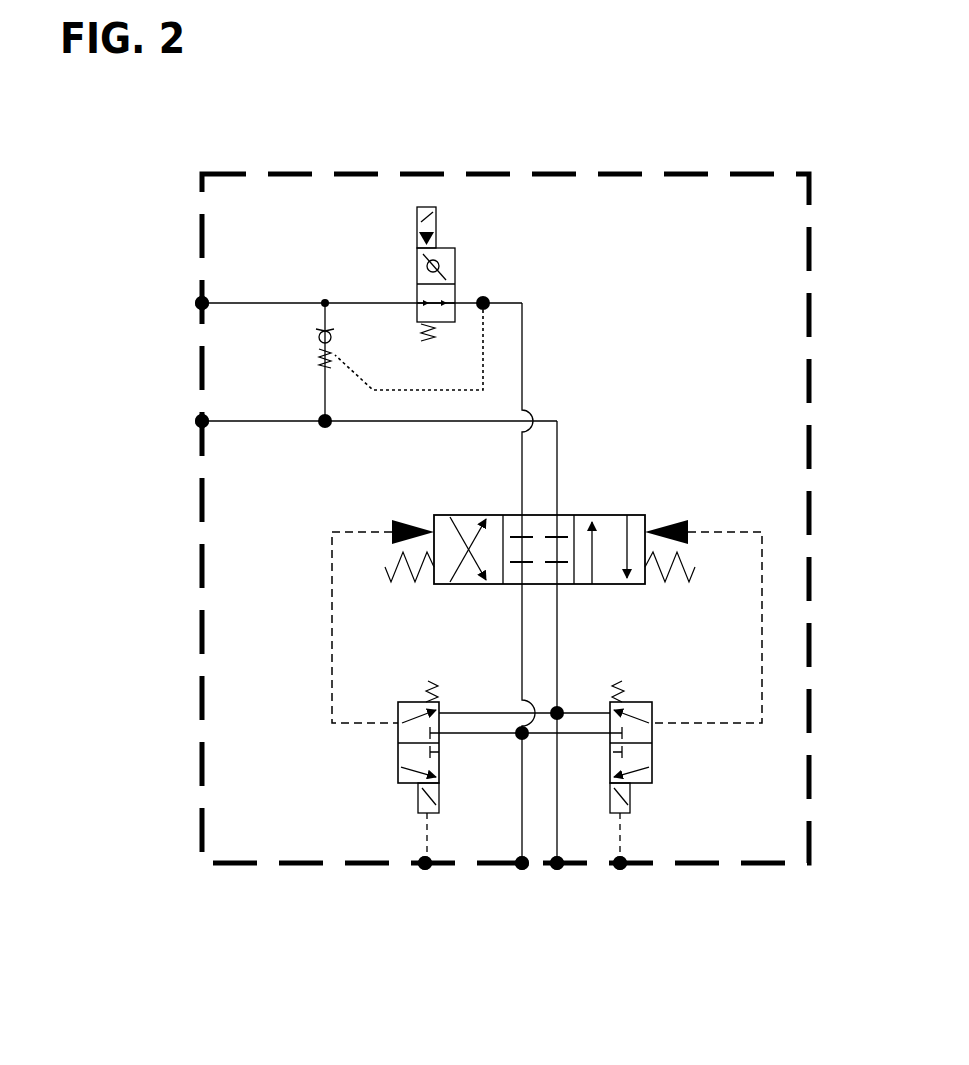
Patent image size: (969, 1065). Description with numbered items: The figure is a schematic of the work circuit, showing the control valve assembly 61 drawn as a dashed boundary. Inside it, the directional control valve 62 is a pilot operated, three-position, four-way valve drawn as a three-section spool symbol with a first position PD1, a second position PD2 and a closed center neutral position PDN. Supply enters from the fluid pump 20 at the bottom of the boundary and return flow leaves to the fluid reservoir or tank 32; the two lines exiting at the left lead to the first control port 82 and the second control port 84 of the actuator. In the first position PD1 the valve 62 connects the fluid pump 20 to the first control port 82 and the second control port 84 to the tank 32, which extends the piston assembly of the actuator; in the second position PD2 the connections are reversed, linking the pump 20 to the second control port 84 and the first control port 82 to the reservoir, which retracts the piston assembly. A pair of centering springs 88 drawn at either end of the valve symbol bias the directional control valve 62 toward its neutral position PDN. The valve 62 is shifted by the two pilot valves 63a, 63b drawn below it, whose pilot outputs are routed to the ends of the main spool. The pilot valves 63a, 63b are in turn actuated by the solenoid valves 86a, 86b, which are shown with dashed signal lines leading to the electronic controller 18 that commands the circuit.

The control valve assembly 61 is at (177, 197).
The directional control valve 62 is at (535, 512).
The second position PD2 is at (437, 515).
The closed center neutral position PDN is at (515, 515).
The first position PD1 is at (637, 515).
The centering springs 88 is at (410, 582).
The pilot valve 63a is at (400, 702).
The pilot valve 63b is at (652, 702).
The solenoid valve 86a is at (438, 802).
The solenoid valve 86b is at (610, 805).
The first control port 82 is at (196, 308).
The second control port 84 is at (196, 426).
The electronic controller 18 is at (425, 868).
The fluid pump 20 is at (520, 870).
The fluid reservoir or tank 32 is at (558, 870).